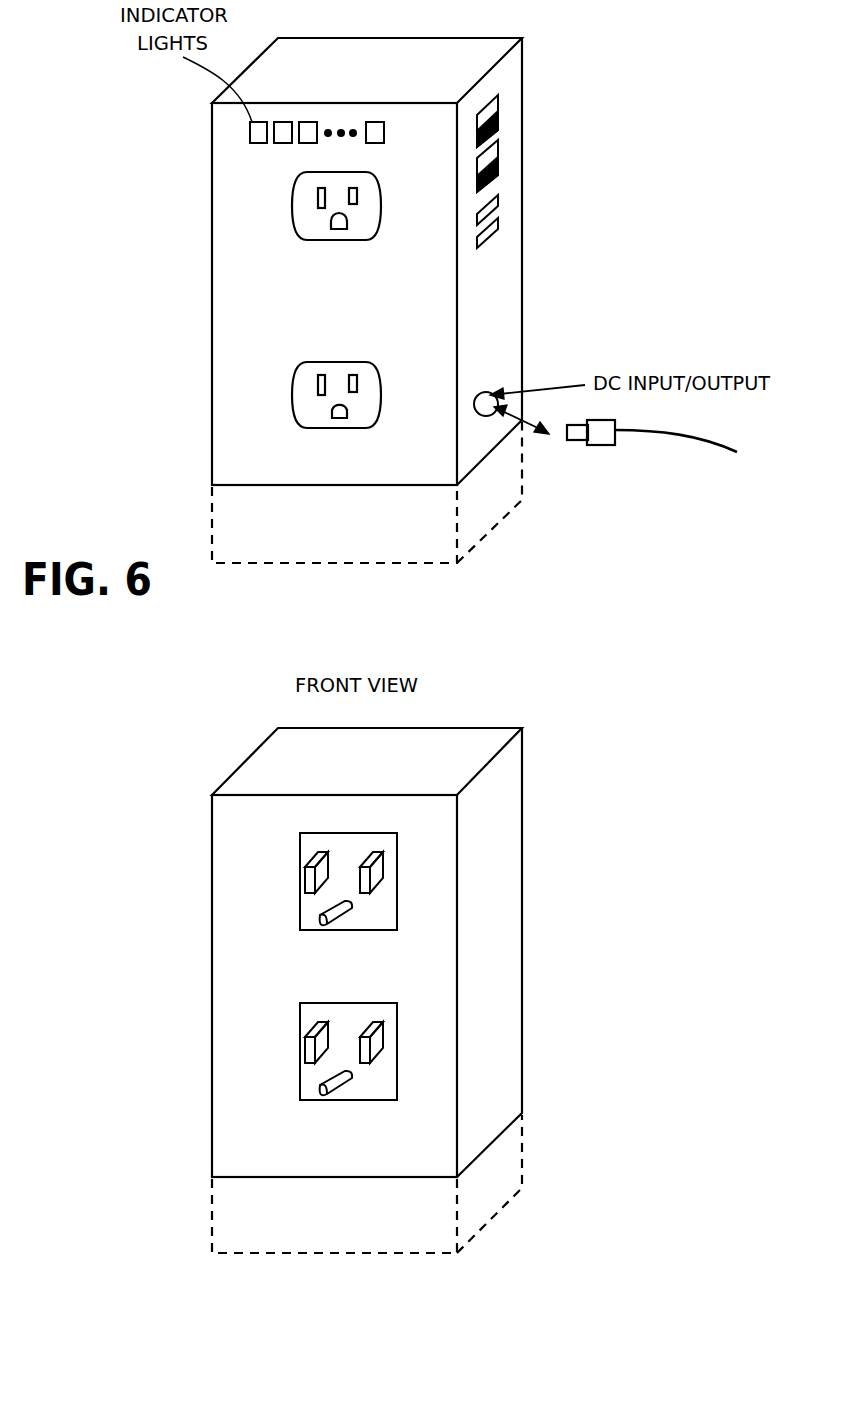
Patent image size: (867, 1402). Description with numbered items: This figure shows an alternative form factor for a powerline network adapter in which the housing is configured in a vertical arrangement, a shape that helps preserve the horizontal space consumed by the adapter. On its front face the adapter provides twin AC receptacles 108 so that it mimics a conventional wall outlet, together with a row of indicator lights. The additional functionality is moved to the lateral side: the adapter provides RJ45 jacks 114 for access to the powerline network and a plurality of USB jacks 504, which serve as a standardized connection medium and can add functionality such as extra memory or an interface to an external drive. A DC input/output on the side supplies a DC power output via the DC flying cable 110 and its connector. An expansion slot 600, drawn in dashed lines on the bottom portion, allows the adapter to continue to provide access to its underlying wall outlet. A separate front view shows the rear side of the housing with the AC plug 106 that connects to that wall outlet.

The AC plug 106 is at (357, 845).
The AC receptacle 108 is at (276, 202).
The DC flying cable 110 is at (633, 433).
The RJ45 jacks 114 is at (507, 185).
The USB jacks 504 is at (507, 248).
The expansion slot 600 is at (362, 543).